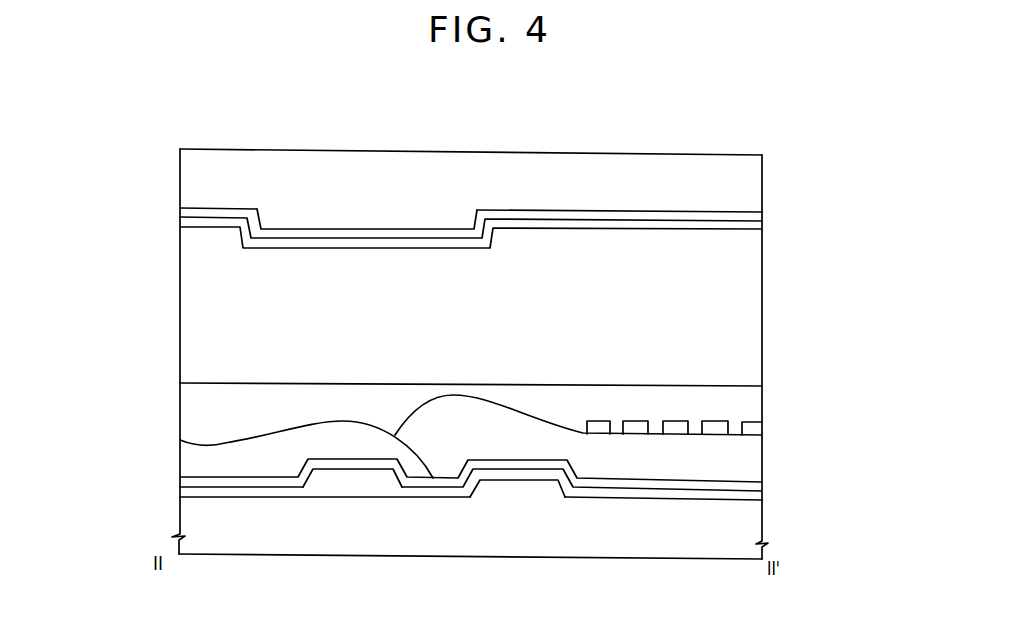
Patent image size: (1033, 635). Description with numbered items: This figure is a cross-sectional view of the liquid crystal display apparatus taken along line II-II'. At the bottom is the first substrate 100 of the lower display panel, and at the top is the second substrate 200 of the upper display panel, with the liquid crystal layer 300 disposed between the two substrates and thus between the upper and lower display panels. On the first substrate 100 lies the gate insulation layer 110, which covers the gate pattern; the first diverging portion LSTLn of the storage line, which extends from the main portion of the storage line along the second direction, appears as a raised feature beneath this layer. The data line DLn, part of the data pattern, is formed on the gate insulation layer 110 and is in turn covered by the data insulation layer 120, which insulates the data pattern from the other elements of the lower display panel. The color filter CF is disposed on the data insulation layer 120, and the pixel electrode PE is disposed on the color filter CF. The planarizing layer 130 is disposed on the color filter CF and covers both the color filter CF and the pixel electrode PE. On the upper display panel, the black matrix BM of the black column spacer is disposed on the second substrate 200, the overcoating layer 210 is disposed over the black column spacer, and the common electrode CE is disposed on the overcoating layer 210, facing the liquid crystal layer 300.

The second substrate 200 is at (757, 183).
The black matrix BM is at (433, 216).
The overcoating layer 210 is at (760, 216).
The common electrode CE is at (755, 227).
The liquid crystal layer 300 is at (755, 318).
The planarizing layer 130 is at (755, 403).
The color filter CF is at (755, 460).
The pixel electrode PE is at (602, 427).
The data insulation layer 120 is at (761, 485).
The gate insulation layer 110 is at (761, 493).
The data line DLn is at (353, 478).
The first diverging portion LSTLn is at (521, 488).
The first substrate 100 is at (755, 530).